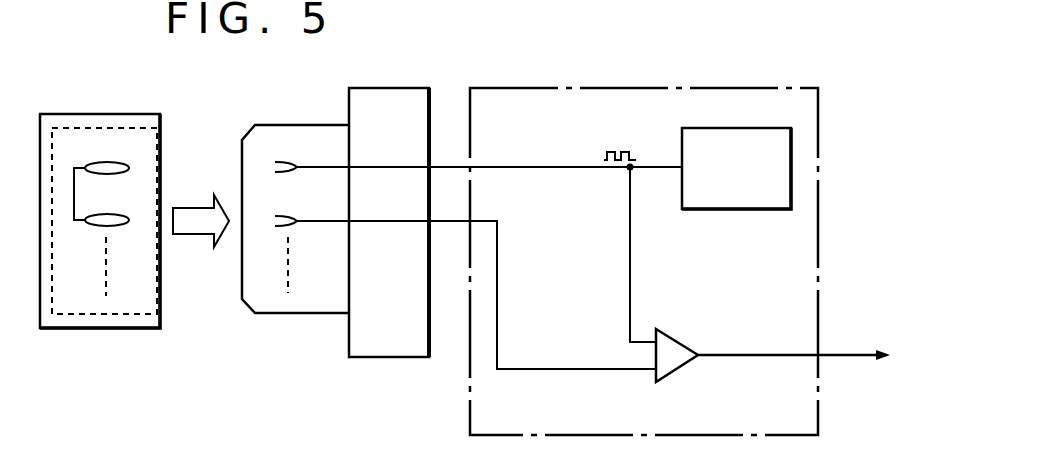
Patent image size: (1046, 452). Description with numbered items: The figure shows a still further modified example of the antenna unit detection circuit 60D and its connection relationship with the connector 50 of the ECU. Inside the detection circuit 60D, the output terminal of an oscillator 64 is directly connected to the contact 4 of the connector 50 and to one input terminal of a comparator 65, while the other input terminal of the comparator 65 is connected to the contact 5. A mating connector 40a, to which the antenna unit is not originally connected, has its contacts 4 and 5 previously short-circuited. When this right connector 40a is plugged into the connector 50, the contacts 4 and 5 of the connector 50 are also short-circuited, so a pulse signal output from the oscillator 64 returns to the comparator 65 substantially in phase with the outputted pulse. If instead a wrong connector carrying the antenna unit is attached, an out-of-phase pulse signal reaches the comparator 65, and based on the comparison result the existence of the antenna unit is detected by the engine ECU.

The connector 40a is at (115, 113).
The contact 4 is at (378, 184).
The contact 5 is at (370, 283).
The connector 50 is at (403, 87).
The antenna unit detection circuit 60D is at (640, 87).
The oscillator 64 is at (737, 210).
The comparator 65 is at (680, 367).